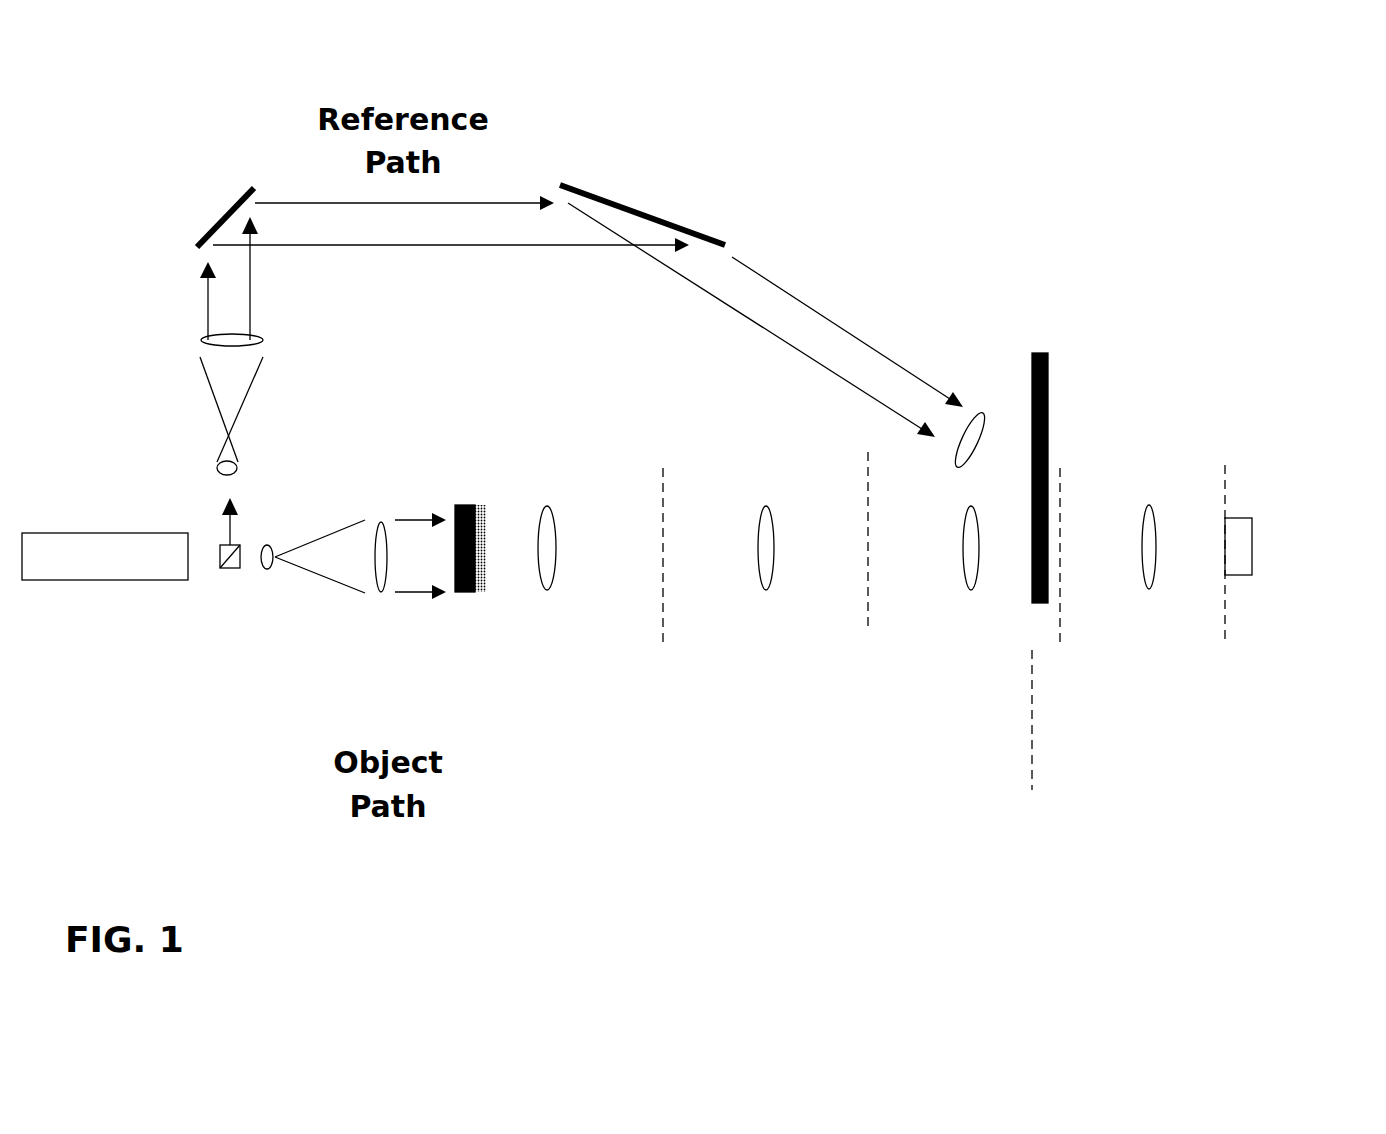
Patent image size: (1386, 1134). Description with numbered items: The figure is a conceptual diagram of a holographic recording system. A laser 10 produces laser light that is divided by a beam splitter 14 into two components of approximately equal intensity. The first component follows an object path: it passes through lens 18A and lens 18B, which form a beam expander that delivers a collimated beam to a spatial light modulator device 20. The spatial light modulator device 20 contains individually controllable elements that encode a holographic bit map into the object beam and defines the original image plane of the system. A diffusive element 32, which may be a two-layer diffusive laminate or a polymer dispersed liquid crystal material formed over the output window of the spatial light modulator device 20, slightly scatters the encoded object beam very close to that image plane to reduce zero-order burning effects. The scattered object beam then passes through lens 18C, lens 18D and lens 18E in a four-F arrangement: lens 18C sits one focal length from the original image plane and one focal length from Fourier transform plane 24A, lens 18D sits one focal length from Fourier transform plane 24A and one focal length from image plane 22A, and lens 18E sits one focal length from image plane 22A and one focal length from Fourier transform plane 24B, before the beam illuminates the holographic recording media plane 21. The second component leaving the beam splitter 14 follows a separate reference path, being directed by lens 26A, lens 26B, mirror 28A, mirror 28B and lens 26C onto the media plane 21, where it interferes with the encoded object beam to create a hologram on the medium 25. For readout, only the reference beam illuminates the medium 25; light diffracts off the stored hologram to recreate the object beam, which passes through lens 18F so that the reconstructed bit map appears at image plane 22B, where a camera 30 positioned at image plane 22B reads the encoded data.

The laser 10 is at (105, 556).
The beam splitter 14 is at (225, 568).
The lens 18A is at (268, 548).
The lens 18B is at (382, 522).
The lens 18C is at (545, 590).
The lens 18D is at (762, 590).
The lens 18E is at (967, 590).
The lens 18F is at (1145, 589).
The spatial light modulator device 20 is at (455, 592).
The holographic recording media plane 21 is at (1029, 778).
The image plane 22A is at (868, 611).
The image plane 22B is at (1225, 618).
The Fourier transform plane 24A is at (663, 516).
The Fourier transform plane 24B is at (1060, 468).
The medium 25 is at (1044, 353).
The lens 26A is at (238, 470).
The lens 26B is at (263, 341).
The lens 26C is at (980, 418).
The mirror 28A is at (217, 222).
The mirror 28B is at (637, 209).
The camera 30 is at (1252, 553).
The diffusive element 32 is at (480, 592).